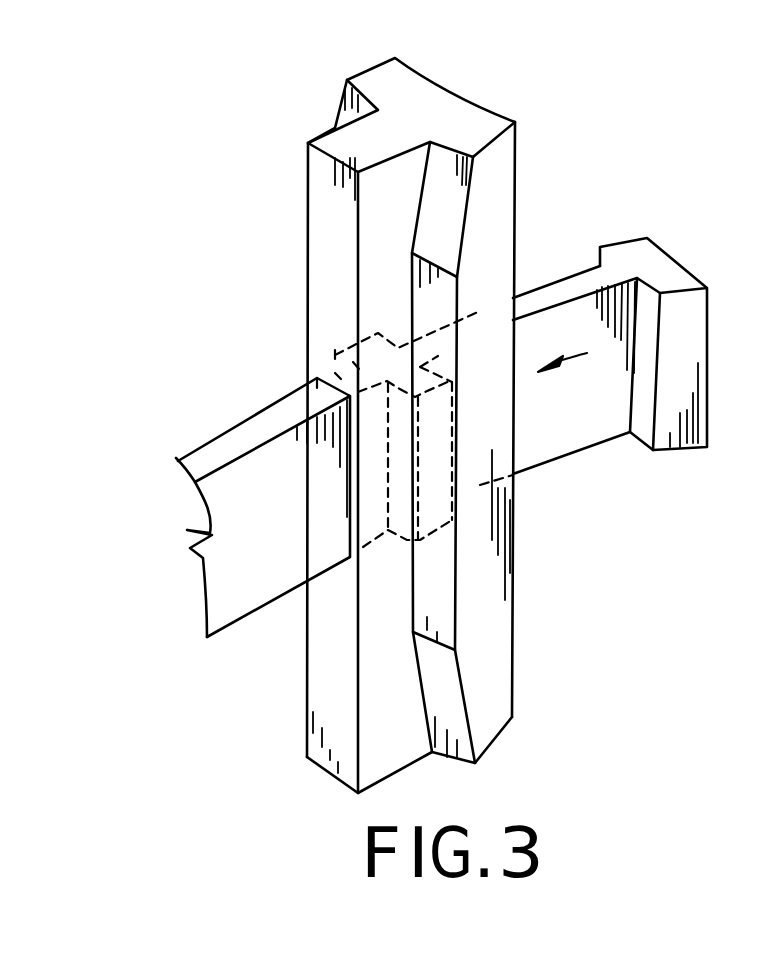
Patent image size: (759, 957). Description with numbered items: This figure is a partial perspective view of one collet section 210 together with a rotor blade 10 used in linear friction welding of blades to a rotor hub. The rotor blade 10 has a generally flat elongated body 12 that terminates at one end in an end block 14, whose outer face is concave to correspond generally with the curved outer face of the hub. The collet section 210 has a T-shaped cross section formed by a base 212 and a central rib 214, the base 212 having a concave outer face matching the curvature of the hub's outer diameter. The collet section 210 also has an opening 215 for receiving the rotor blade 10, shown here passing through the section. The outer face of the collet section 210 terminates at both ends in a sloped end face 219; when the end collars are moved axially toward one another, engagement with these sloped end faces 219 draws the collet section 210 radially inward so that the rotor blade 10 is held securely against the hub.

The rotor blade 10 is at (216, 452).
The elongated body 12 is at (563, 413).
The end block 14 is at (667, 283).
The collet section 210 is at (517, 170).
The base 212 is at (440, 122).
The central rib 214 is at (328, 210).
The opening 215 is at (305, 393).
The sloped end face 219 is at (355, 112).